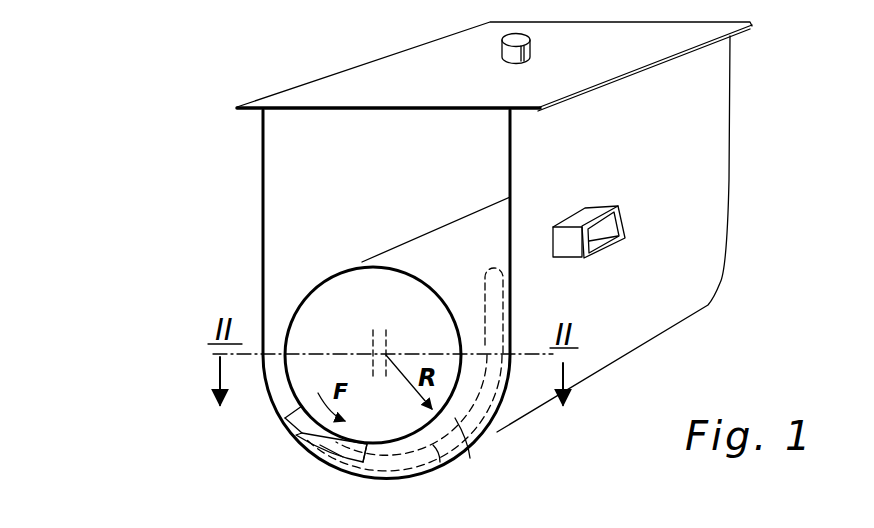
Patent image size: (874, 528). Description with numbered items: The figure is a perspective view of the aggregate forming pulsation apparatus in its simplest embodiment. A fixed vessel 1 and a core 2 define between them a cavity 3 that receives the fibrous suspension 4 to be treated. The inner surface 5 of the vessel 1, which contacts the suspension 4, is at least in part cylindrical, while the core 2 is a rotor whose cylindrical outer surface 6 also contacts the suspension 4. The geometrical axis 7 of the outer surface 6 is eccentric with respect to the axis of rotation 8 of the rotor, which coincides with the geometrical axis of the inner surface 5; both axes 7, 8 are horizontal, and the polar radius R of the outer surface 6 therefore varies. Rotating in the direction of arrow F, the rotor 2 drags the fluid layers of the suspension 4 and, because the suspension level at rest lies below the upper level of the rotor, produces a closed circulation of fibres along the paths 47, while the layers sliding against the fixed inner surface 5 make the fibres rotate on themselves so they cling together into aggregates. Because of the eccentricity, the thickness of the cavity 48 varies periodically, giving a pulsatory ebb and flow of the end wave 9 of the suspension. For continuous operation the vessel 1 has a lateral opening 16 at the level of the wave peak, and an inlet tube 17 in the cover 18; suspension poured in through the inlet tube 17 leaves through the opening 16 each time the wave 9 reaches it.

The vessel 1 is at (618, 348).
The core 2 is at (328, 300).
The cavity 3 is at (283, 402).
The suspension 4 is at (437, 461).
The inner surface 5 is at (480, 422).
The outer surface 6 is at (367, 448).
The geometrical axis 7 is at (372, 352).
The axis of rotation 8 is at (387, 354).
The end wave 9 is at (478, 344).
The lateral opening 16 is at (588, 218).
The inlet tube 17 is at (530, 50).
The cover 18 is at (463, 85).
The circulation paths 47 is at (399, 459).
The cavity thickness 48 is at (456, 422).